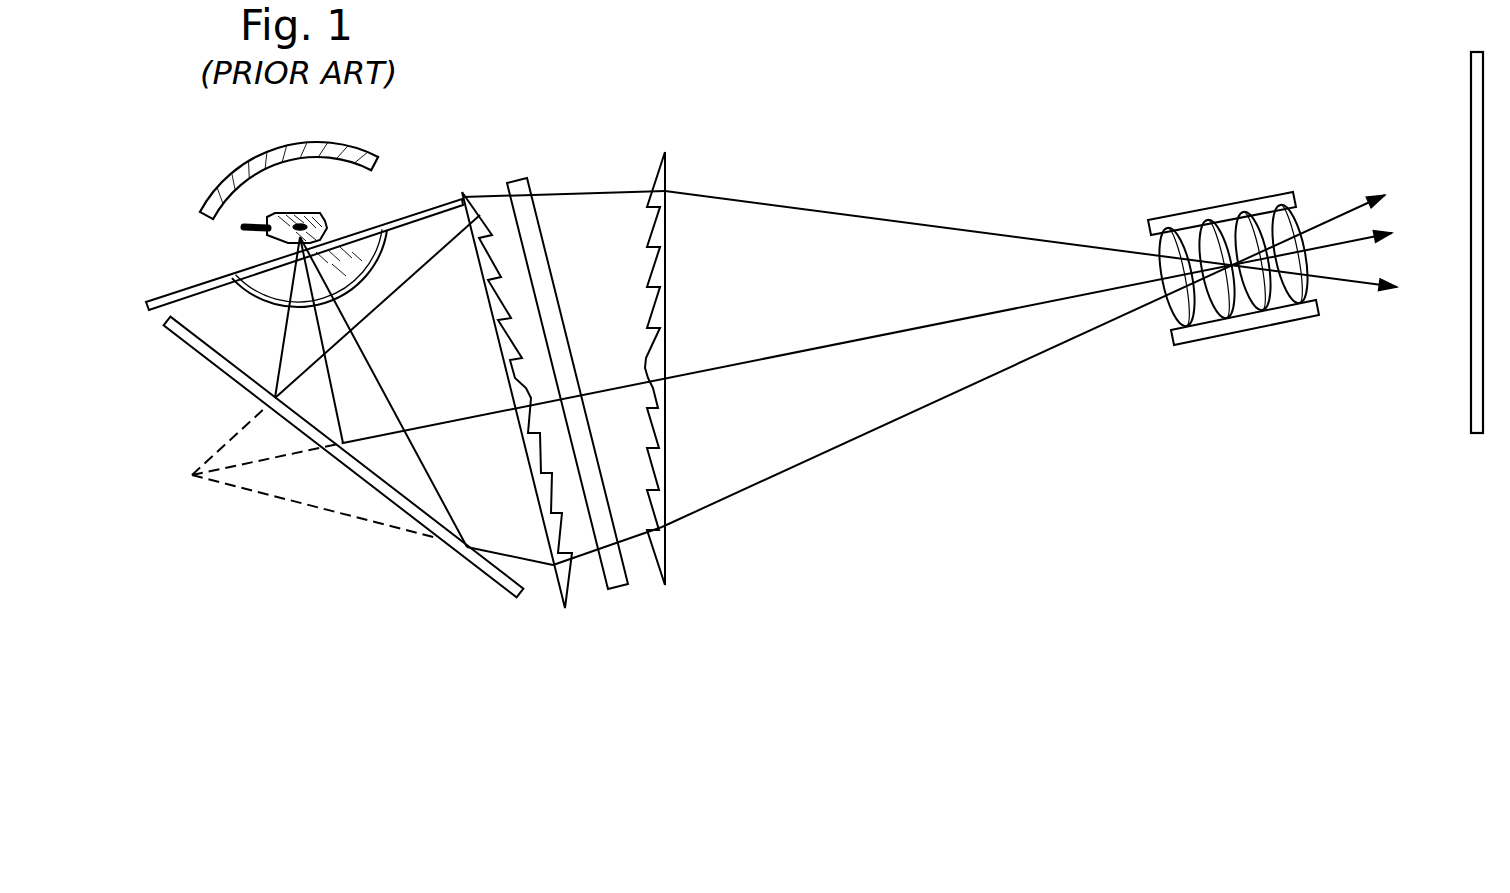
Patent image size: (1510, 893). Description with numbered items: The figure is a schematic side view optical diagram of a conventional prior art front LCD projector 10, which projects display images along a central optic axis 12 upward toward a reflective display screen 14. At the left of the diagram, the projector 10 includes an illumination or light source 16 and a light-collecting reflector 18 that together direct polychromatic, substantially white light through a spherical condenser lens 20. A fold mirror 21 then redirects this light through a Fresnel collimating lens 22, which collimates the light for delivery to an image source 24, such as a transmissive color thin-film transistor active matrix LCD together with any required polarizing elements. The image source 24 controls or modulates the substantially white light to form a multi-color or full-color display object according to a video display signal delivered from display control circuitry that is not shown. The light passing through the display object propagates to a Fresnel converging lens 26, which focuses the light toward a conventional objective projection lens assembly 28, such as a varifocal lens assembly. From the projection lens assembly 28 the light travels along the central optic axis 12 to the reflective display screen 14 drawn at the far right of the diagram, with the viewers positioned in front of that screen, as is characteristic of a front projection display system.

The front LCD projector 10 is at (780, 90).
The central optic axis 12 is at (797, 333).
The reflective display screen 14 is at (1470, 363).
The light source 16 is at (307, 214).
The light-collecting reflector 18 is at (336, 145).
The spherical condenser lens 20 is at (256, 297).
The fold mirror 21 is at (499, 581).
The Fresnel collimating lens 22 is at (568, 596).
The image source 24 is at (572, 350).
The Fresnel converging lens 26 is at (667, 548).
The objective projection lens assembly 28 is at (1250, 340).